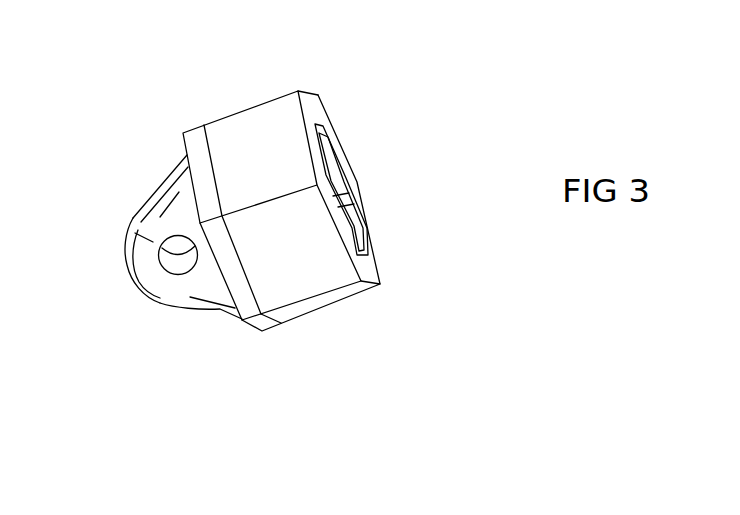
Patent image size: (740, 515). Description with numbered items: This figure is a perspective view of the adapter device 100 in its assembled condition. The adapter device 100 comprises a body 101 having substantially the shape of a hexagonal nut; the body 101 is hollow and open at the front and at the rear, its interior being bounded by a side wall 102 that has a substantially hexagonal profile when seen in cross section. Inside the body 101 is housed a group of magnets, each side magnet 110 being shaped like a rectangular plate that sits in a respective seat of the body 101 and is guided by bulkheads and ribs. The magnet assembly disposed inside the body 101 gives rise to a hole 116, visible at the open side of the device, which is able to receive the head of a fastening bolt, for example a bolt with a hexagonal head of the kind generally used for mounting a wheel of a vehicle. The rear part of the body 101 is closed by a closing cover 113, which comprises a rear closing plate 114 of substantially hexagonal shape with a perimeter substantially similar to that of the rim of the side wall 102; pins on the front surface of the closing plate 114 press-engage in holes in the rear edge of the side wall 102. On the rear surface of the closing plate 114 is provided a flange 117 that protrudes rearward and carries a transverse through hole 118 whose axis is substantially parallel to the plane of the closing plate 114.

The adapter device 100 is at (381, 66).
The body 101 is at (252, 106).
The side wall 102 is at (317, 273).
The side magnet 110 is at (350, 226).
The closing cover 113 is at (210, 315).
The rear closing plate 114 is at (191, 153).
The hole 116 is at (335, 156).
The flange 117 is at (133, 233).
The transverse through hole 118 is at (182, 266).